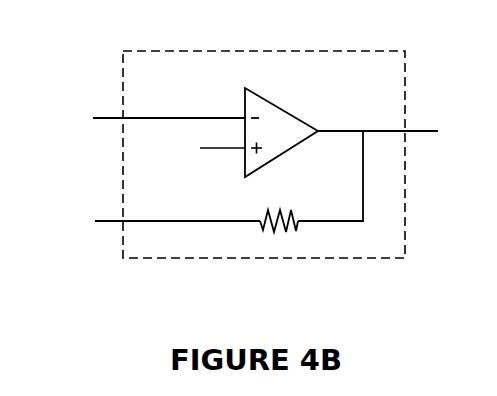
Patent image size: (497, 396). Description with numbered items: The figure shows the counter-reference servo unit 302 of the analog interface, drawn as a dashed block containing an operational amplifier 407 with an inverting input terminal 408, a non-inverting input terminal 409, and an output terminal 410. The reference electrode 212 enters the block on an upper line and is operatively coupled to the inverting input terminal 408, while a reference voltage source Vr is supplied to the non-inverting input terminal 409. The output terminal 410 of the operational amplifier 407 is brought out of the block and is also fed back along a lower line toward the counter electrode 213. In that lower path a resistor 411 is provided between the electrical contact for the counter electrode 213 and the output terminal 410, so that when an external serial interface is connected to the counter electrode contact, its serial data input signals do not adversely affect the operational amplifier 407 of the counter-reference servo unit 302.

The reference electrode 212 is at (109, 118).
The counter electrode 213 is at (108, 222).
The counter-reference servo unit 302 is at (405, 200).
The operational amplifier 407 is at (270, 98).
The inverting input terminal 408 is at (245, 115).
The non-inverting input terminal 409 is at (245, 148).
The output terminal 410 is at (318, 131).
The resistor 411 is at (285, 226).